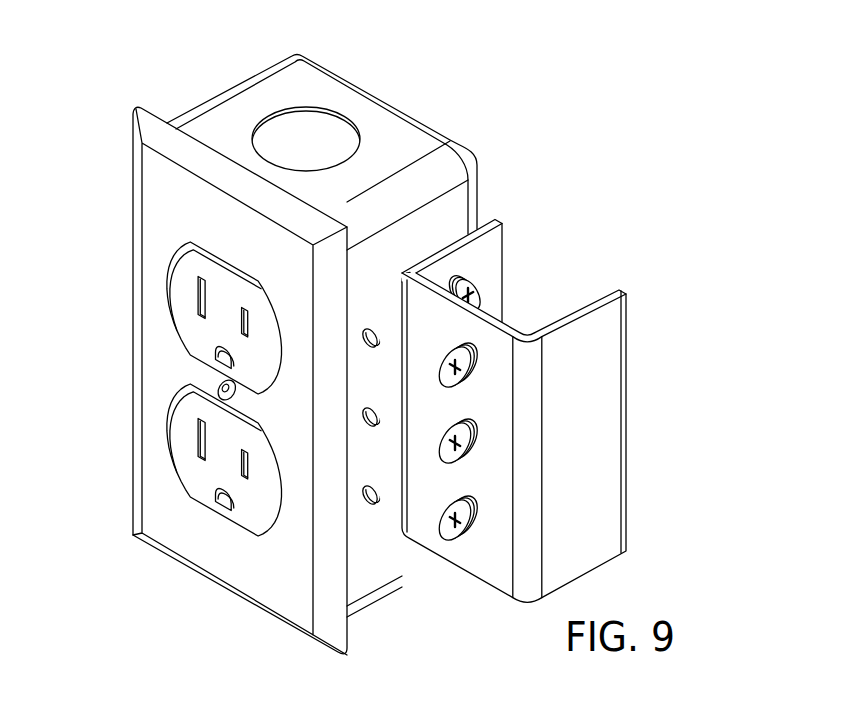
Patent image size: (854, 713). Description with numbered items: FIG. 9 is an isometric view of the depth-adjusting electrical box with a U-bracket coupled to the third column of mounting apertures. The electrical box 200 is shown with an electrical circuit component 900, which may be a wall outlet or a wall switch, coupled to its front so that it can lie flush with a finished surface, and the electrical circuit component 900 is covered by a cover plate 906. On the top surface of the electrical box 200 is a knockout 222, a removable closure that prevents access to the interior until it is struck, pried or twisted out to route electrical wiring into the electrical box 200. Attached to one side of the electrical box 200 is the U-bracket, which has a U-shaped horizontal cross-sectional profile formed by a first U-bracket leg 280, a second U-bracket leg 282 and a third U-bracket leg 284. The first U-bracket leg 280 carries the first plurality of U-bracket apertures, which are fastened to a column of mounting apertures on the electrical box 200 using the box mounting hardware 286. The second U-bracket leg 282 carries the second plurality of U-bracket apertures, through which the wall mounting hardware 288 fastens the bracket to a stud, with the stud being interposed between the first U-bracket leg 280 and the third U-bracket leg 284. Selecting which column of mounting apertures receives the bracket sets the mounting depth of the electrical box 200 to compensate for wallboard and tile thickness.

The electrical box 200 is at (222, 116).
The knockout 222 is at (340, 130).
The first U-bracket leg 280 is at (503, 237).
The second U-bracket leg 282 is at (500, 583).
The third U-bracket leg 284 is at (627, 408).
The box mounting hardware 286 is at (480, 291).
The wall mounting hardware 288 is at (440, 383).
The electrical circuit component 900 is at (173, 468).
The cover plate 906 is at (140, 214).